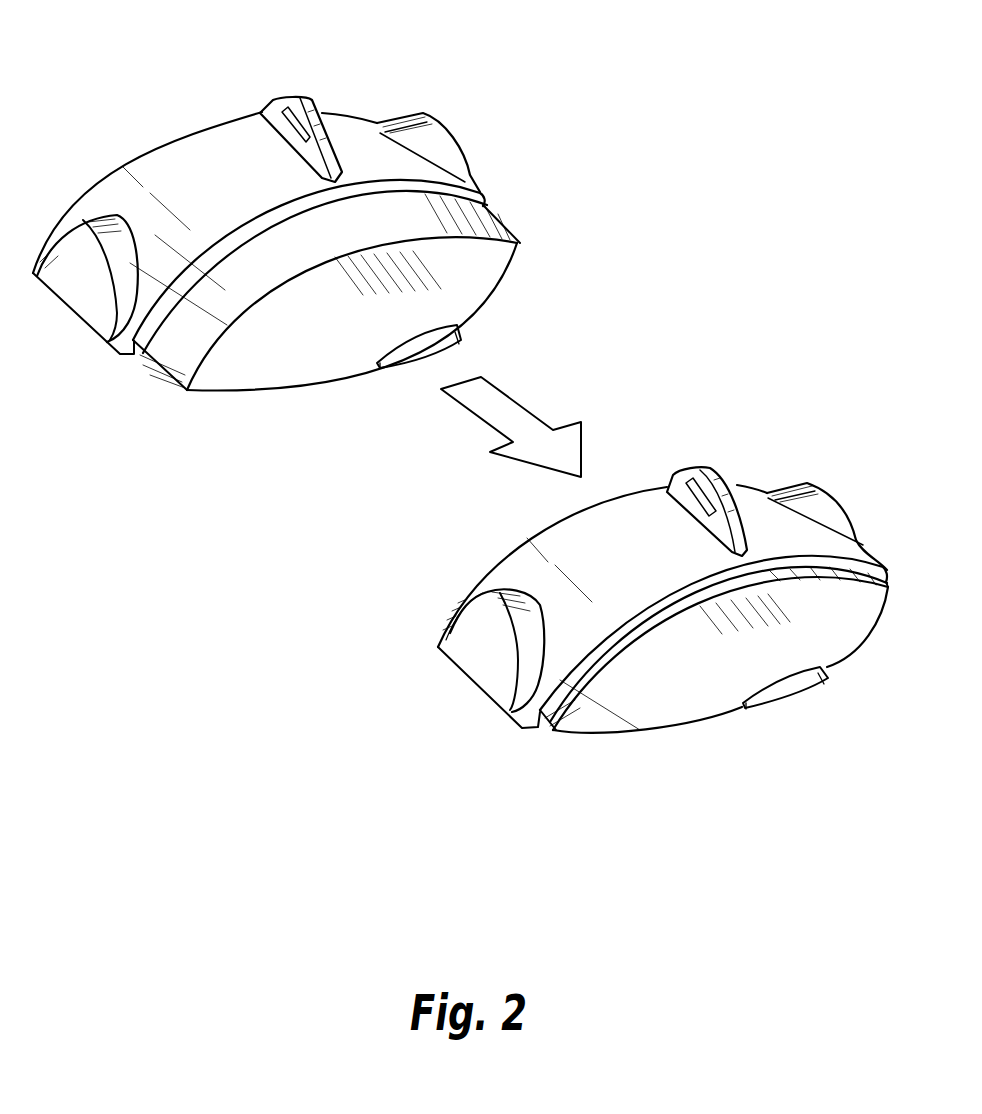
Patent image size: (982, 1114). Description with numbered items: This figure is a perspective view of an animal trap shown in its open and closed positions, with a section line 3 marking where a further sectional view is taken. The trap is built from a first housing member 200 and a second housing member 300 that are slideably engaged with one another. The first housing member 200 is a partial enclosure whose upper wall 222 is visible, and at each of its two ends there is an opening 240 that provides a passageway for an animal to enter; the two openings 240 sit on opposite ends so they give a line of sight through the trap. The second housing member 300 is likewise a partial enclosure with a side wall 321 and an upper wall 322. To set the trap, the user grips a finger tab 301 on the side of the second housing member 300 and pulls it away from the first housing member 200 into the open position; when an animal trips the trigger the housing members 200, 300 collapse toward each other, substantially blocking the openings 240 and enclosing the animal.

The section line 3- 3 is at (108, 93).
The first housing member 200 is at (347, 124).
The upper wall 222 is at (163, 212).
The opening 240 is at (430, 130).
The second housing member 300 is at (509, 486).
The finger tab 301 is at (445, 337).
The side wall 321 is at (279, 344).
The upper wall 322 is at (231, 275).